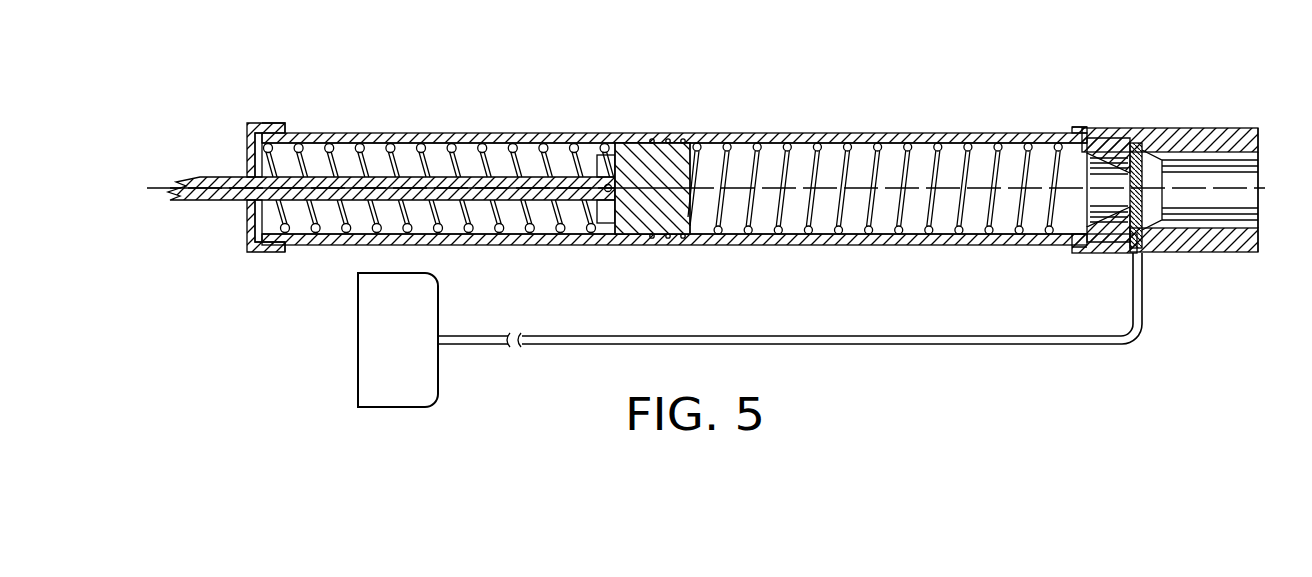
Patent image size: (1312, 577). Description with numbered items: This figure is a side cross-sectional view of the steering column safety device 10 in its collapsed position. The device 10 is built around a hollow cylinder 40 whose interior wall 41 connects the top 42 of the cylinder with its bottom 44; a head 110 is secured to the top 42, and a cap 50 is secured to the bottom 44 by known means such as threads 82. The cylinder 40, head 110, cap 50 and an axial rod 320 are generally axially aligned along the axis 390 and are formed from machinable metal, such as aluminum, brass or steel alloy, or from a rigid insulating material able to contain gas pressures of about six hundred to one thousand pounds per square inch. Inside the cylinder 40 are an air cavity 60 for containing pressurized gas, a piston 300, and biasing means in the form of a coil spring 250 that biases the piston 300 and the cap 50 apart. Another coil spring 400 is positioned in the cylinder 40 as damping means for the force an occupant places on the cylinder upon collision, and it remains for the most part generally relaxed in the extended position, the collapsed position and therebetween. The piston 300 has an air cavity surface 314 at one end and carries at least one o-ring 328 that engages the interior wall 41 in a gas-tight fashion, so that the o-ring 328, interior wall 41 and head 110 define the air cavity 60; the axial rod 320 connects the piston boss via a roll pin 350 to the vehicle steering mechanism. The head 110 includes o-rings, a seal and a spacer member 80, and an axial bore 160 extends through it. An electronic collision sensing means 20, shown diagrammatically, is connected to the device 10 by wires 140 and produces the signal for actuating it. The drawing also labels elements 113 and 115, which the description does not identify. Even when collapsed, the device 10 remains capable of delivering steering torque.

The steering column safety device 10 is at (832, 76).
The electronic collision sensing means 20 is at (395, 273).
The hollow cylinder 40 is at (865, 132).
The interior wall 41 is at (805, 132).
The top of cylinder 42 is at (1104, 259).
The bottom of cylinder 44 is at (255, 135).
The cap 50 is at (250, 238).
The air cavity 60 is at (883, 228).
The spacer member 80 is at (1110, 137).
The threads 82 is at (272, 253).
The head 110 is at (1180, 253).
The end face 113 is at (1258, 240).
The collar 115 is at (1072, 127).
The wires 140 is at (1013, 345).
The axial bore 160 is at (1258, 165).
The coil spring 250 is at (370, 158).
The piston 300 is at (632, 232).
The air cavity surface 314 is at (722, 166).
The axial rod 320 is at (242, 172).
The o-ring 328 is at (668, 242).
The roll pin 350 is at (612, 133).
The axis 390 is at (152, 186).
The coil spring 400 is at (968, 132).